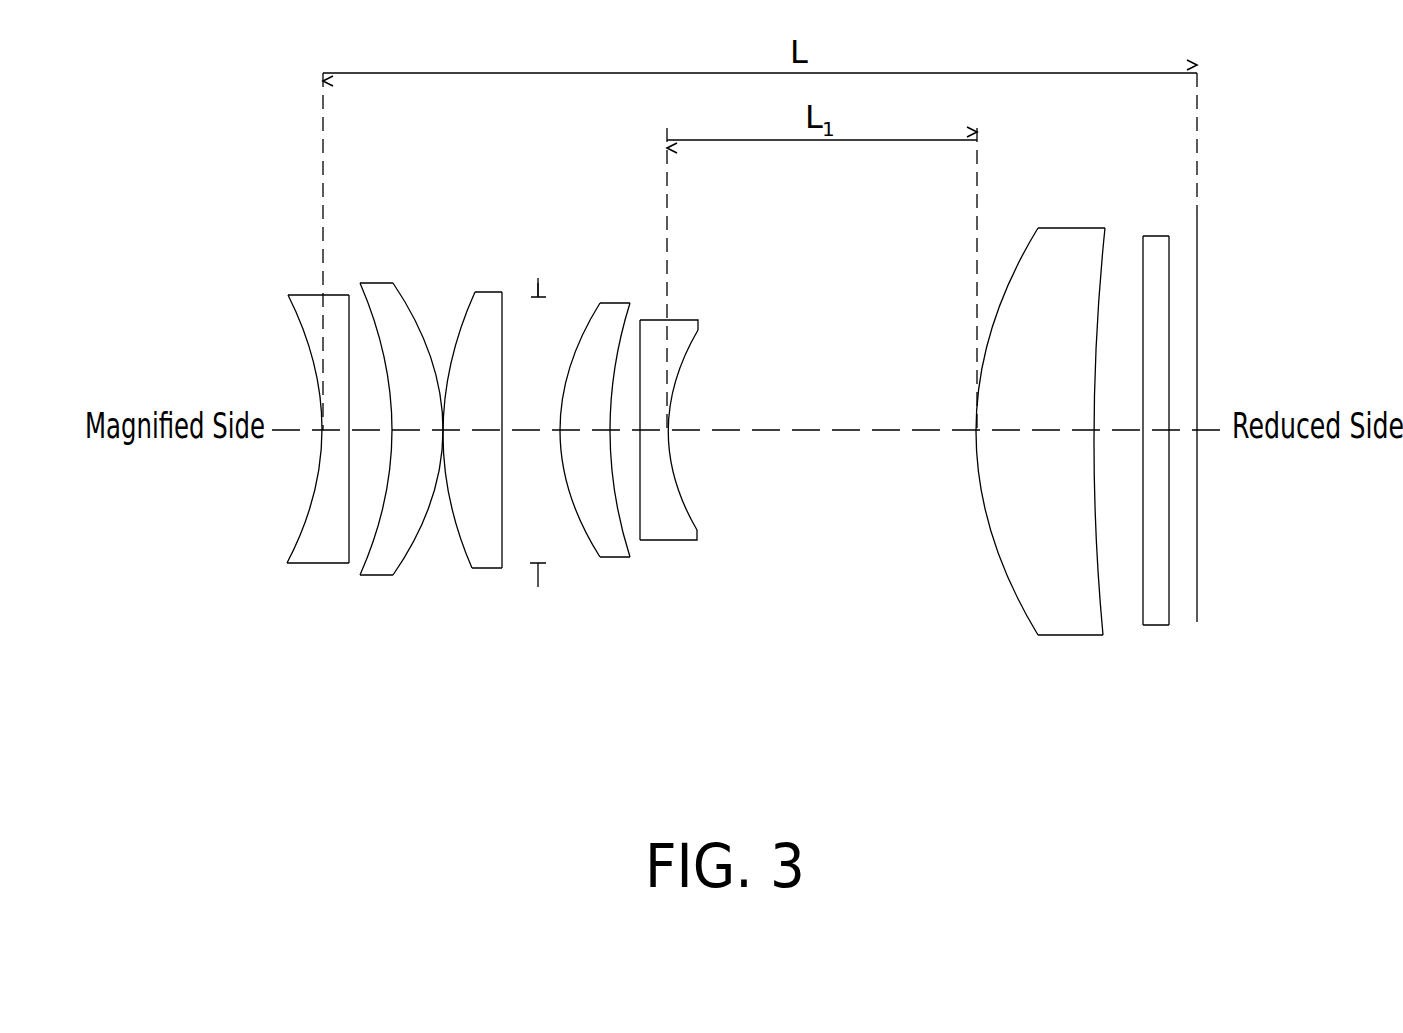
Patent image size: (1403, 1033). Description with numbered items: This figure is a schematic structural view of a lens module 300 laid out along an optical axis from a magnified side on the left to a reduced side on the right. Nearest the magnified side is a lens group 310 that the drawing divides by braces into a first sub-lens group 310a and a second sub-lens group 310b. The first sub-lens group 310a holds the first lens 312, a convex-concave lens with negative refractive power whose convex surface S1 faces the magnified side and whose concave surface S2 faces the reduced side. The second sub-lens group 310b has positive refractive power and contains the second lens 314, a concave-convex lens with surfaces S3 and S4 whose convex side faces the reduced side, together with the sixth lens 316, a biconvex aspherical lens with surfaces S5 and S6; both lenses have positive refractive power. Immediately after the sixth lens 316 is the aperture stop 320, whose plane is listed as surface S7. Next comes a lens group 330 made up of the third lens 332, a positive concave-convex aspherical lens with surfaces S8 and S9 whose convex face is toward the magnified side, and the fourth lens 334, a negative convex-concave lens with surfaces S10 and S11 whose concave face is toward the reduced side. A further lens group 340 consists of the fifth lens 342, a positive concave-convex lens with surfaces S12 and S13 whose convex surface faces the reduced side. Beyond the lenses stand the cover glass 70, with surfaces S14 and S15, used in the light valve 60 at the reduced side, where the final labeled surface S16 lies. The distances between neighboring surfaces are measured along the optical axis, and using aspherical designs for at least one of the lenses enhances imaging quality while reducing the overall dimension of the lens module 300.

The lens module 300 is at (748, 482).
The first lens group 310 is at (384, 467).
The first sub lens group 310a is at (294, 459).
The second sub-lens group 310b is at (442, 441).
The first lens 312 is at (293, 435).
The second lens 314 is at (399, 432).
The sixth lens 316 is at (481, 417).
The aperture stop 320 is at (560, 422).
The second lens group 330 is at (680, 459).
The third lens 332 is at (642, 431).
The fourth lens 334 is at (720, 437).
The third lens group 340 is at (1043, 441).
The fifth lens 342 is at (1040, 416).
The cover glass 70 is at (1143, 434).
The light valve 60 is at (1227, 438).
The surface S1 is at (296, 322).
The surface S2 is at (346, 317).
The surface S3 is at (373, 317).
The surface S4 is at (421, 334).
The surface S5 is at (467, 307).
The surface S6 is at (504, 307).
The surface S7 is at (540, 282).
The surface S8 is at (587, 318).
The surface S9 is at (626, 332).
The surface S10 is at (644, 350).
The surface S11 is at (683, 367).
The surface S12 is at (1029, 237).
The surface S13 is at (1101, 253).
The surface S14 is at (1141, 256).
The surface S15 is at (1171, 256).
The surface S16 image plane S16 is at (1199, 358).